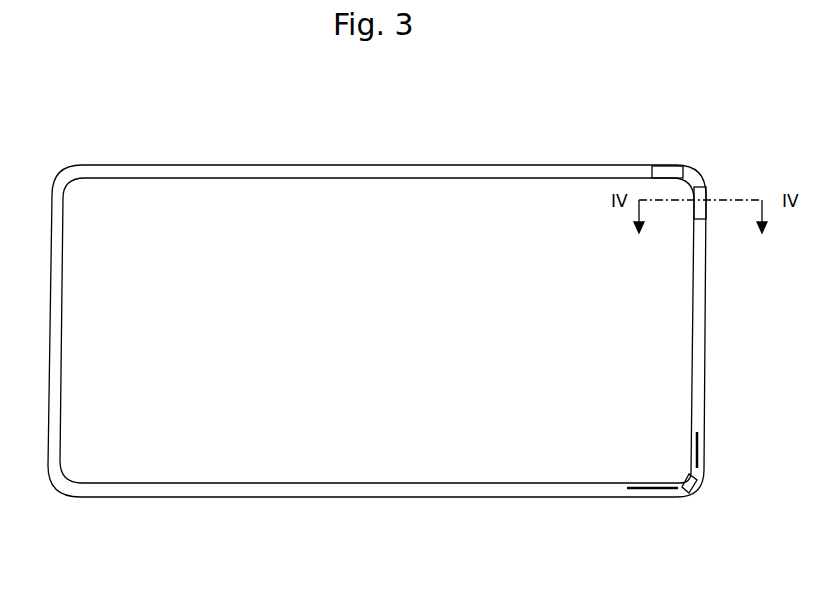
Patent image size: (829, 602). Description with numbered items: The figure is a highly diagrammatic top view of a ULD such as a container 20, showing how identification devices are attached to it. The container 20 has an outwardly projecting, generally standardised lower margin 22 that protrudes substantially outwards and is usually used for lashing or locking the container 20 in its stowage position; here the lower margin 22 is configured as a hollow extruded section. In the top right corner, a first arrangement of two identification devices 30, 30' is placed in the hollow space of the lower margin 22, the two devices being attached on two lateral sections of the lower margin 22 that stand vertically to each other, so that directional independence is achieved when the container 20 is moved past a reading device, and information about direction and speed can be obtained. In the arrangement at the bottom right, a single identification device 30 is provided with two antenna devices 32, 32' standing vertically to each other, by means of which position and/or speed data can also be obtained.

The container 20 is at (377, 282).
The lower margin 22 is at (473, 165).
The identification device 30 is at (694, 320).
The identification device 30' is at (745, 184).
The antenna device 32 is at (742, 440).
The antenna device 32' is at (652, 542).